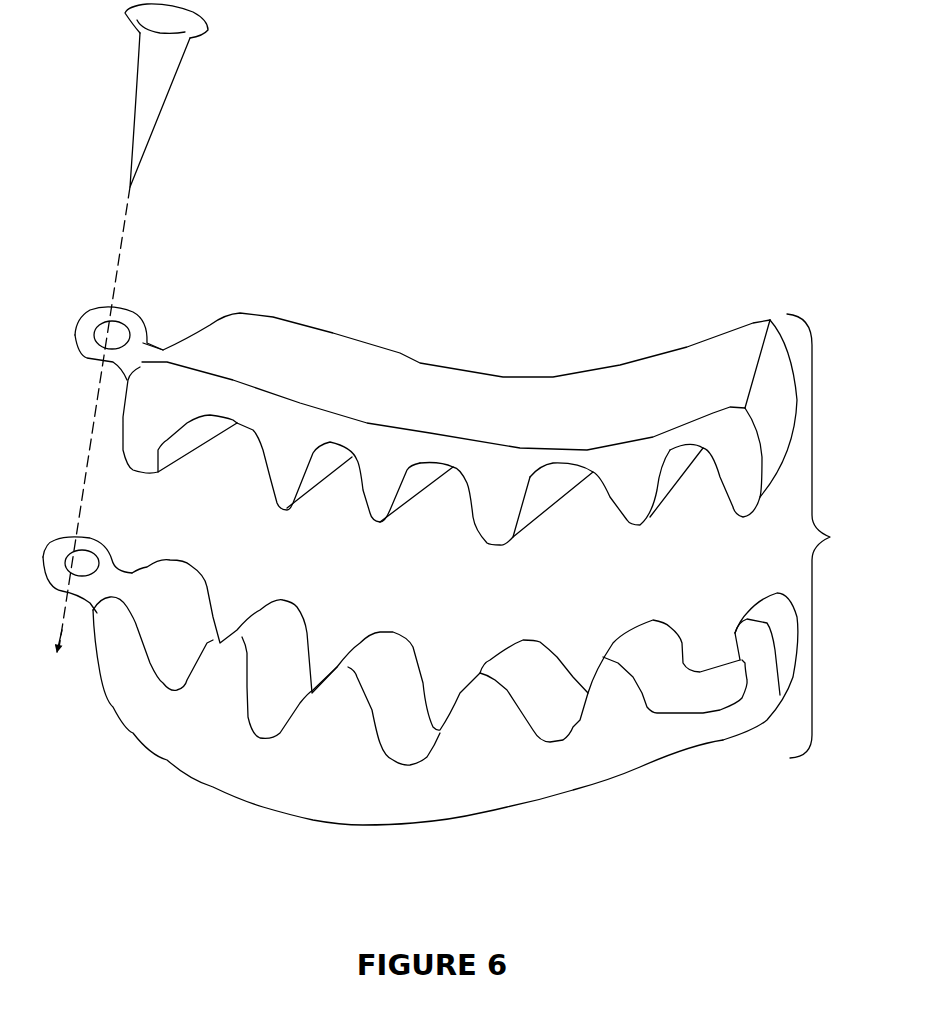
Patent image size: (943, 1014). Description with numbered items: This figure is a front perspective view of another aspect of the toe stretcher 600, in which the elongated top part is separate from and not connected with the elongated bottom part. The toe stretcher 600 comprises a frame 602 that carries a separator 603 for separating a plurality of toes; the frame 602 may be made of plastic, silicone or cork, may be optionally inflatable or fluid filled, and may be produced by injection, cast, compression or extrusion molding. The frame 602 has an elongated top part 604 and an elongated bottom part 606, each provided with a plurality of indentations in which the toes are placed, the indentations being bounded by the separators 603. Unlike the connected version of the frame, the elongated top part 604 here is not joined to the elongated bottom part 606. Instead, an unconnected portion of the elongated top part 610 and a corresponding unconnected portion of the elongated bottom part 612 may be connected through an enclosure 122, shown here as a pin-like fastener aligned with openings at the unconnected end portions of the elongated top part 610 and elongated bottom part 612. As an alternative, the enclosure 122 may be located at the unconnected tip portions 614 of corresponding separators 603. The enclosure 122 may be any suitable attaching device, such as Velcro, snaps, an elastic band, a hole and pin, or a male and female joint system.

The enclosure 122 is at (62, 532).
The toe stretcher 600 is at (573, 278).
The frame 602 is at (461, 523).
The separator 603 is at (374, 475).
The elongated top part 604 is at (649, 390).
The elongated bottom part 606 is at (602, 756).
The unconnected portion of the elongated top part 610 is at (147, 434).
The unconnected portion of the elongated bottom part 612 is at (120, 642).
The unconnected tip portions 614 is at (380, 518).